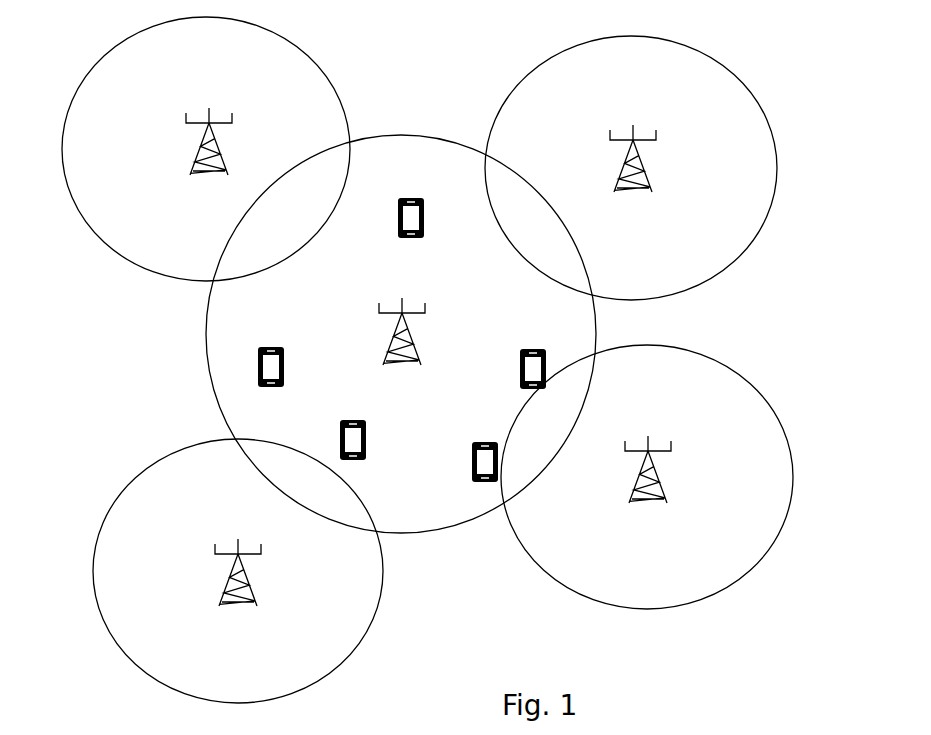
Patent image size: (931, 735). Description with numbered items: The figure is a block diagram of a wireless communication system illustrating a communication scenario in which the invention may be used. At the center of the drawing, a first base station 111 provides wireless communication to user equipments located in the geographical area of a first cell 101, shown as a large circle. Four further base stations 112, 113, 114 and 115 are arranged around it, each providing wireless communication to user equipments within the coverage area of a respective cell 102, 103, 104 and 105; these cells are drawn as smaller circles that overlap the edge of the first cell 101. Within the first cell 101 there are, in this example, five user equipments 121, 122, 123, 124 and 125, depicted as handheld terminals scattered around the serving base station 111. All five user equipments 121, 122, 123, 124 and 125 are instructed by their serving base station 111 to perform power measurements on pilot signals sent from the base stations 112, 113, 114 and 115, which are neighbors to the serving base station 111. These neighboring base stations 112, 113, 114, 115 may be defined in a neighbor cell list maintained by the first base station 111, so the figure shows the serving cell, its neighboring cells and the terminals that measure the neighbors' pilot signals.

The first cell 101 is at (206, 342).
The cell 102 is at (108, 55).
The cell 103 is at (728, 263).
The cell 104 is at (750, 570).
The cell 105 is at (383, 583).
The first base station 111 is at (415, 355).
The base station 112 is at (222, 148).
The base station 113 is at (643, 165).
The base station 114 is at (667, 477).
The base station 115 is at (257, 583).
The user equipment 121 is at (366, 450).
The user equipment 122 is at (424, 220).
The user equipment 123 is at (520, 358).
The user equipment 124 is at (472, 452).
The user equipment 125 is at (284, 373).